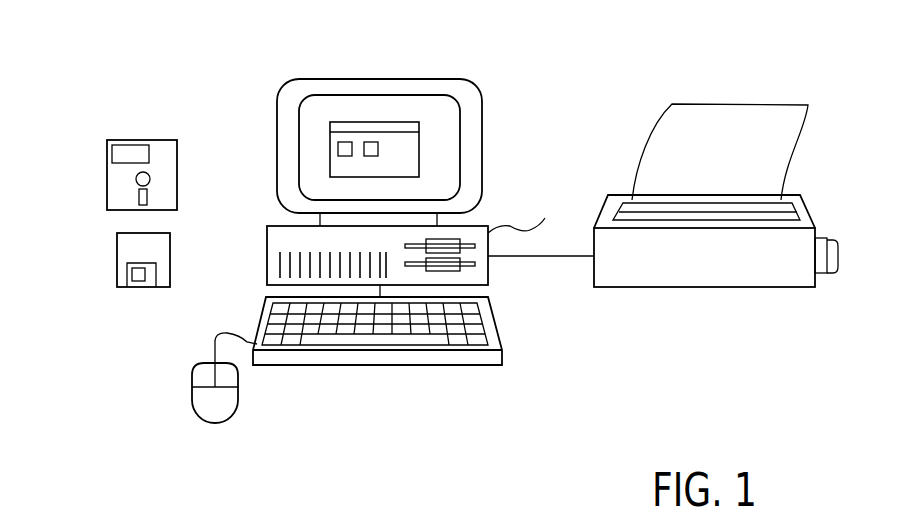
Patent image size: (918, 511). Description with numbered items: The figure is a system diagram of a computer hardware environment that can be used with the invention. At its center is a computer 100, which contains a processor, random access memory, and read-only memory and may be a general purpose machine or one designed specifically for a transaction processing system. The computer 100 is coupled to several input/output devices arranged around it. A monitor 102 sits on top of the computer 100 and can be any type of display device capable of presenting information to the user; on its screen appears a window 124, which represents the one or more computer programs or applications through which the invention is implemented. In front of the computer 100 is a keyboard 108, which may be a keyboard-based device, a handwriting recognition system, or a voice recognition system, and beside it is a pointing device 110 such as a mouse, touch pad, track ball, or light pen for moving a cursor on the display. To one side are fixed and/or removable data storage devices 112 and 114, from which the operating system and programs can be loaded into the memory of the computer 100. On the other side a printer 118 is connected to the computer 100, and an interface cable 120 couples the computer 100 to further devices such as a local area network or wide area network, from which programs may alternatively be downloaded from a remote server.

The computer 100 is at (468, 53).
The monitor 102 is at (277, 152).
The keyboard 108 is at (467, 367).
The pointing device 110 is at (192, 415).
The data storage device 112 is at (107, 192).
The data storage device 114 is at (117, 270).
The printer 118 is at (710, 287).
The interface cable 120 is at (510, 226).
The window 124 is at (355, 122).